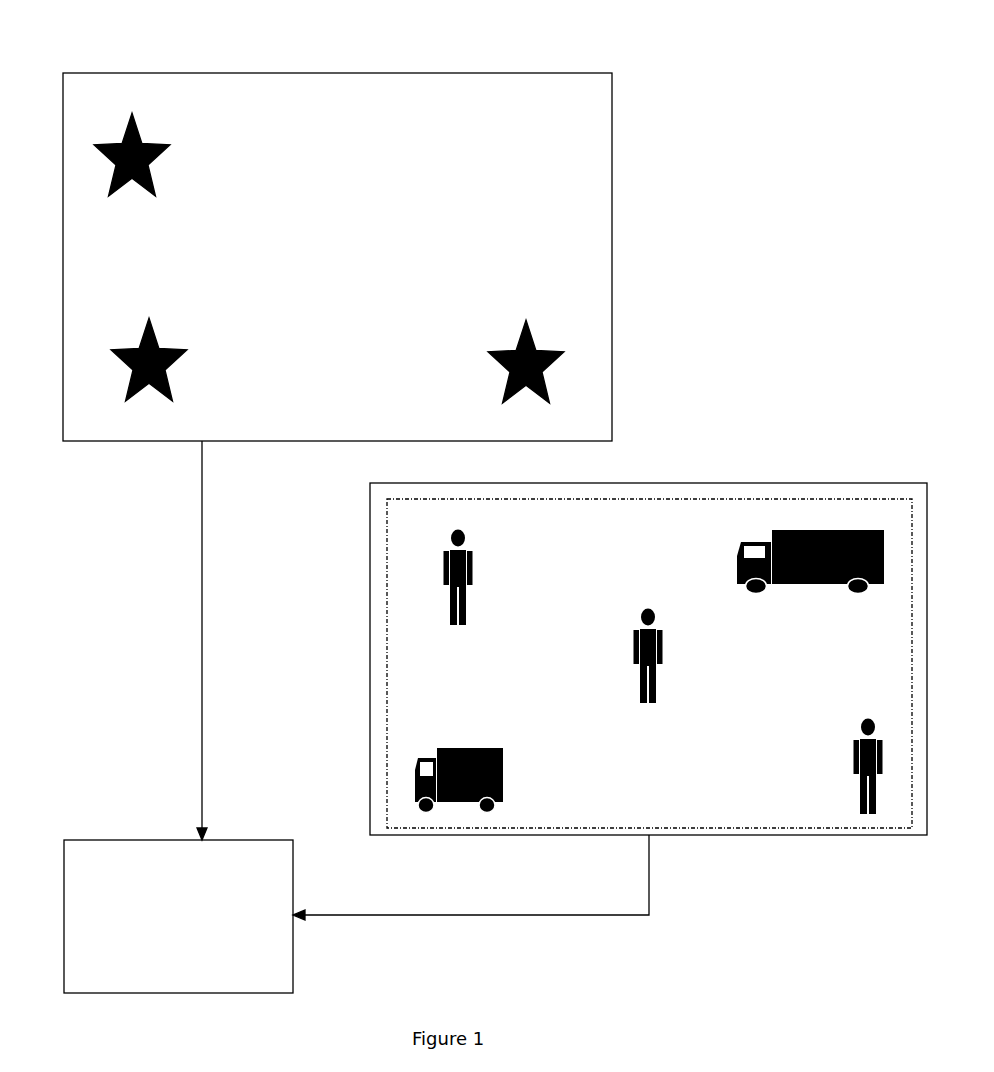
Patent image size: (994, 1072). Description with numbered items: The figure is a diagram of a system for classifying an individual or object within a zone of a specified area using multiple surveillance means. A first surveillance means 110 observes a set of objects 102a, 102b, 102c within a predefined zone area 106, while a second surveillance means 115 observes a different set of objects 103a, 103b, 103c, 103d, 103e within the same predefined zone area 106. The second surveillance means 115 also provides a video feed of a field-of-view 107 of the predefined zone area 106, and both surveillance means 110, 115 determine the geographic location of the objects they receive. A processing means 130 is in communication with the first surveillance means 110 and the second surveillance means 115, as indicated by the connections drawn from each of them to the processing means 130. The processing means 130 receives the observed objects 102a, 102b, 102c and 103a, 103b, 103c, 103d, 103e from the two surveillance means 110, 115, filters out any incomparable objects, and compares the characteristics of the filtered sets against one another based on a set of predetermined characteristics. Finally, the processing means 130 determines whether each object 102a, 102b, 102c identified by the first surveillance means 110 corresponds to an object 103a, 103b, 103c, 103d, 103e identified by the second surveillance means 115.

The first surveillance means 110 is at (523, 73).
The second surveillance means 115 is at (905, 483).
The processing means 130 is at (196, 936).
The predefined zone area 106 is at (368, 142).
The field-of-view 107 is at (634, 830).
The object 102a is at (168, 147).
The object 102b is at (166, 382).
The object 102c is at (526, 322).
The object 103a is at (487, 573).
The object 103b is at (636, 636).
The object 103c is at (814, 584).
The object 103d is at (503, 769).
The object 103e is at (856, 765).